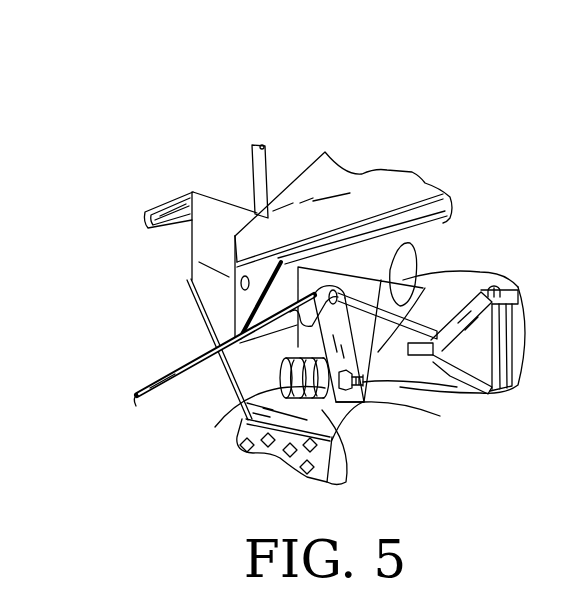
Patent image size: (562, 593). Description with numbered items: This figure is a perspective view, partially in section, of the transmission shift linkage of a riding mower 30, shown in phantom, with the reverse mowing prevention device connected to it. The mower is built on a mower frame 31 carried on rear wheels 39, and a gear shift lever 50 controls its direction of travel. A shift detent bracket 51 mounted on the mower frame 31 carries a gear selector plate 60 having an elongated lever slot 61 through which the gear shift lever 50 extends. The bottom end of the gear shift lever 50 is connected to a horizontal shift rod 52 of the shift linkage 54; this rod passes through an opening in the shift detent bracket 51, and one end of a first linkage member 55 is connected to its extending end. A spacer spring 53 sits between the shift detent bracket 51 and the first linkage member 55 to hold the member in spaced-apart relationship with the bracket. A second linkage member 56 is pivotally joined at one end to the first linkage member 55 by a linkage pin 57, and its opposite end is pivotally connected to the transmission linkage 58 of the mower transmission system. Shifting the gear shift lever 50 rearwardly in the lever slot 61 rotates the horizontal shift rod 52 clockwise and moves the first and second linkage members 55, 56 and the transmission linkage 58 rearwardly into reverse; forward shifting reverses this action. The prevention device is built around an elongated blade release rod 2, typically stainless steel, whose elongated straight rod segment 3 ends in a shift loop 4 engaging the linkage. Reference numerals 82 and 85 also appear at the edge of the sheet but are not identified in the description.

The blade release rod 2 is at (169, 364).
The straight rod segment 3 is at (199, 372).
The shift loop 4 is at (273, 368).
The riding mower 30 is at (430, 177).
The mower frame 31 is at (365, 167).
The rear wheels 39 is at (352, 460).
The gear shift lever 50 is at (266, 146).
The shift detent bracket 51 is at (218, 193).
The horizontal shift rod 52 is at (246, 396).
The spacer spring 53 is at (350, 430).
The shift linkage 54 is at (400, 298).
The first linkage member 55 is at (350, 363).
The second linkage member 56 is at (403, 279).
The linkage pin 57 is at (428, 348).
The transmission linkage 58 is at (484, 283).
The gear selector plate 60 is at (133, 210).
The lever slot 61 is at (182, 222).
The element 82 is at (548, 528).
The element 85 is at (531, 592).